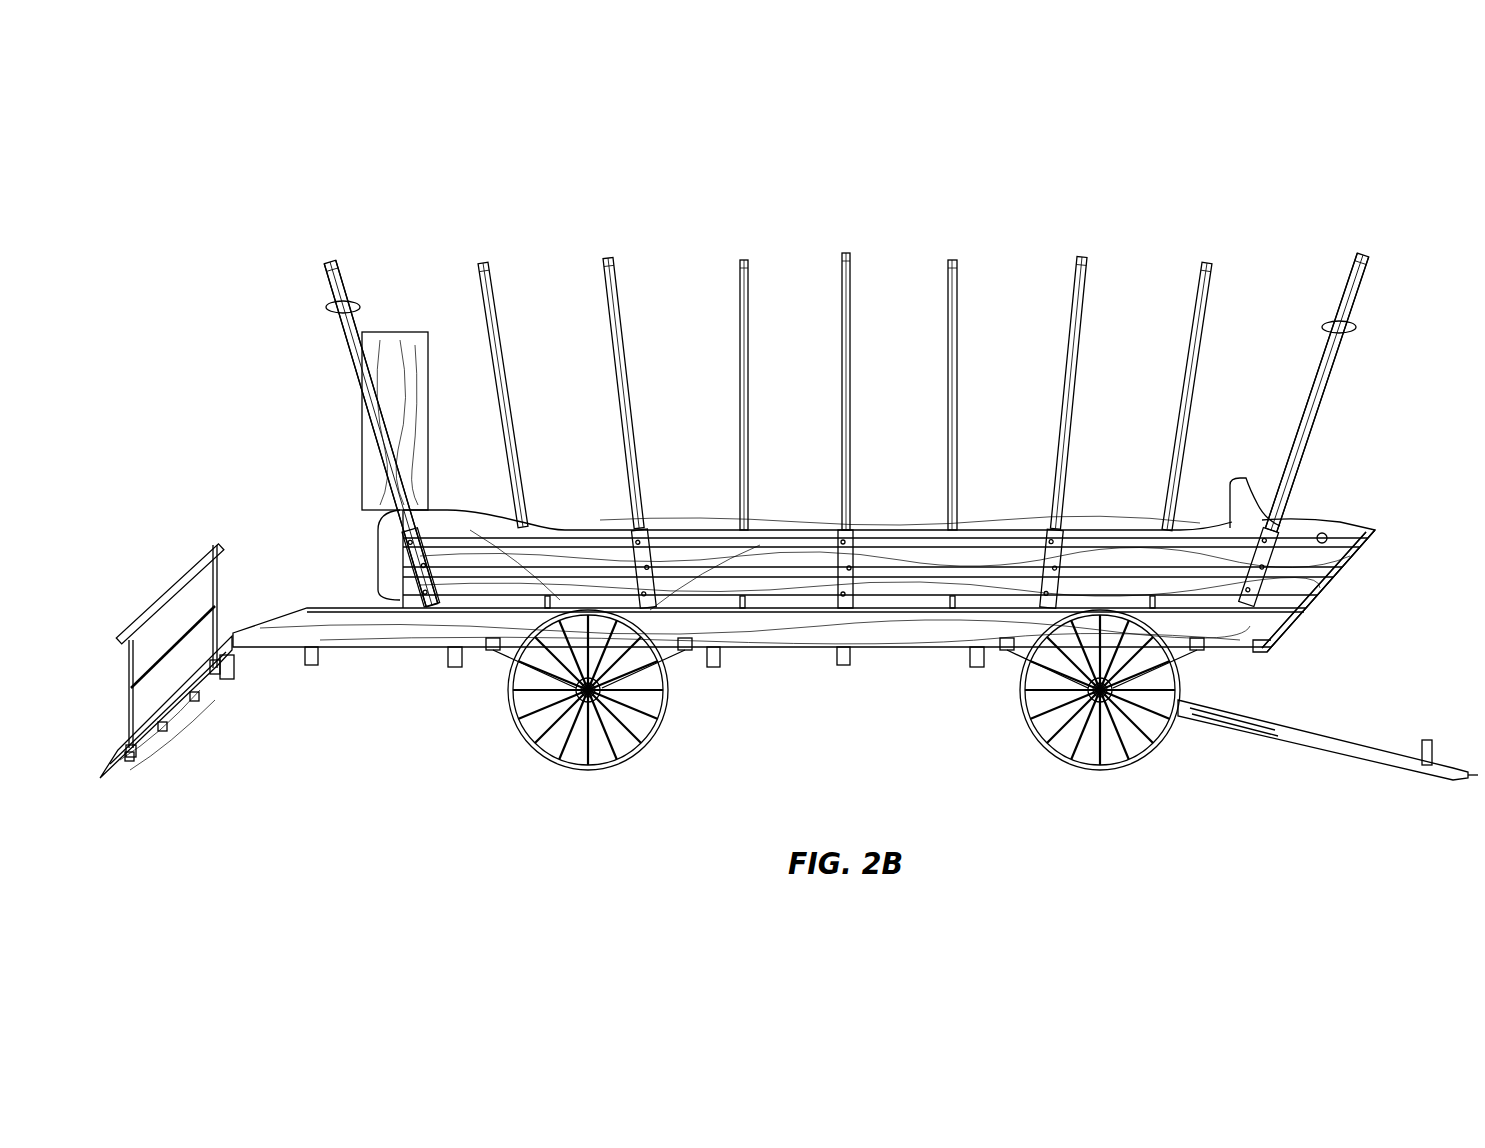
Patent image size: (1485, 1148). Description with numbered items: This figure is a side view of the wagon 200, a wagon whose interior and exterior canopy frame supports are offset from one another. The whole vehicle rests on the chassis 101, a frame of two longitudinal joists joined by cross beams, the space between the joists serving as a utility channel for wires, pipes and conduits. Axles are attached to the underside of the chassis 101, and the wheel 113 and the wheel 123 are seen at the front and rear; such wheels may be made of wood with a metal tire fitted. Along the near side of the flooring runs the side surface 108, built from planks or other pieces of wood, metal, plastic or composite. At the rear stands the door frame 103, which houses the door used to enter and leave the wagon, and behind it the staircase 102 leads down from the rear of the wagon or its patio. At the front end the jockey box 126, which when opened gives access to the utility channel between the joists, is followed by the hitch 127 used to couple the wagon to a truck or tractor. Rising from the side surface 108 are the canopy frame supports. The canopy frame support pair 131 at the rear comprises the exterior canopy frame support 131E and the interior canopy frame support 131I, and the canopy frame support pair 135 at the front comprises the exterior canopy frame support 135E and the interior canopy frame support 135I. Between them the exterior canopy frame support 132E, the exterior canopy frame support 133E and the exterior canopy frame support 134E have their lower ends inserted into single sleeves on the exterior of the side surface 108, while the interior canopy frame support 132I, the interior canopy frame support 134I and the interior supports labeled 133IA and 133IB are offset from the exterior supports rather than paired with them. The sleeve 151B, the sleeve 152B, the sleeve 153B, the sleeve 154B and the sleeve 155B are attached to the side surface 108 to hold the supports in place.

The wagon 200 is at (843, 223).
The chassis 101 is at (792, 648).
The staircase 102 is at (173, 728).
The door frame 103 is at (430, 390).
The side surface 108 is at (376, 558).
The wheel 113 is at (1118, 772).
The wheel 123 is at (562, 767).
The jockey box 126 is at (1328, 587).
The hitch 127 is at (1320, 747).
The canopy frame support pair 131 is at (326, 310).
The exterior canopy frame support 131E is at (329, 283).
The interior canopy frame support 131I is at (340, 271).
The interior canopy frame support 132I is at (478, 282).
The exterior canopy frame support 132E is at (603, 270).
The first interior third stake 133IA is at (740, 279).
The exterior canopy frame support 133E is at (842, 278).
The second interior third stake 133IB is at (957, 298).
The exterior canopy frame support 134E is at (1082, 272).
The interior canopy frame support 134I is at (1185, 393).
The canopy frame support pair 135 is at (1350, 340).
The interior canopy frame support 135I is at (1343, 283).
The exterior canopy frame support 135E is at (1358, 275).
The sleeve 151B is at (428, 540).
The sleeve 152B is at (645, 545).
The sleeve 153B is at (838, 548).
The sleeve 154B is at (1068, 548).
The sleeve 155B is at (1285, 530).